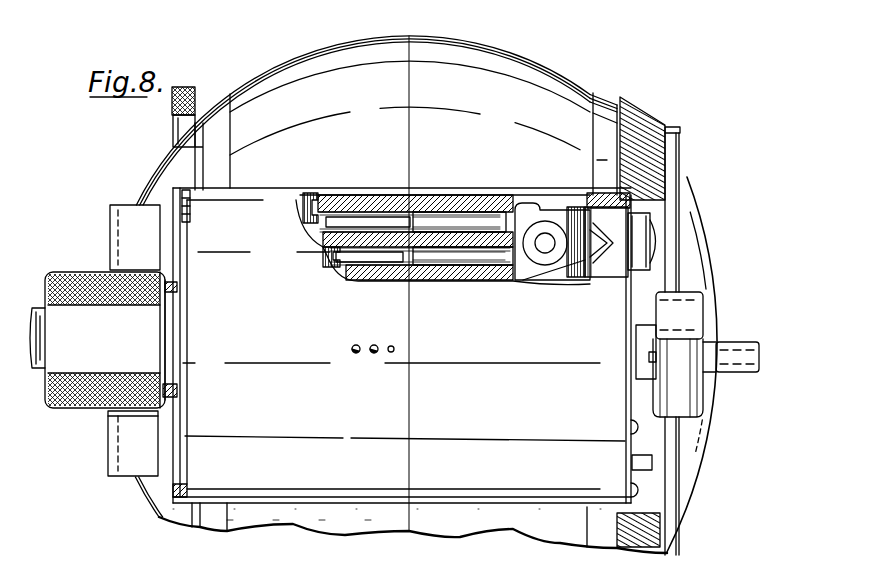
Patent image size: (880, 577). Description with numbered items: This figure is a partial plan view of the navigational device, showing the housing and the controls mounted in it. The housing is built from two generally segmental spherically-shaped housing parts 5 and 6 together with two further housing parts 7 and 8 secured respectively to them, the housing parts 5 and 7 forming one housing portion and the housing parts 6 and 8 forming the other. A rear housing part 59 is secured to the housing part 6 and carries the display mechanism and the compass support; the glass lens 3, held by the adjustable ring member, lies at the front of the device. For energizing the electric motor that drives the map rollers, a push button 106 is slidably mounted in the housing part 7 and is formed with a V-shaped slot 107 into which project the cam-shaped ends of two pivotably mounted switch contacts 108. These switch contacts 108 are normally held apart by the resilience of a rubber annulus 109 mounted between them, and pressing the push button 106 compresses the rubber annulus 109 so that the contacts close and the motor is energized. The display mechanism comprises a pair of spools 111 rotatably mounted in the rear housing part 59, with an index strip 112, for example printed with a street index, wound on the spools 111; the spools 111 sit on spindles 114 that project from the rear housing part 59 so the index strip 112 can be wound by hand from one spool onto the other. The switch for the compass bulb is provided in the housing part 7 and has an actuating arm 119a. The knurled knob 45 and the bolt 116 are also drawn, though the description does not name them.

The glass lens 3 is at (687, 453).
The housing part 5 is at (465, 524).
The housing part 6 is at (340, 509).
The housing part 7 is at (535, 481).
The housing part 8 is at (290, 499).
The knurled knob 45 is at (72, 285).
The rear housing part 59 is at (172, 501).
The push button 106 is at (636, 249).
The V-shaped slot 107 is at (598, 257).
The switch contacts 108 is at (583, 232).
The rubber annulus 109 is at (537, 222).
The spools 111 is at (408, 212).
The index strip 112 is at (330, 210).
The spindles 114 is at (185, 88).
The bolt 116 is at (716, 352).
The actuating arm 119a is at (632, 462).